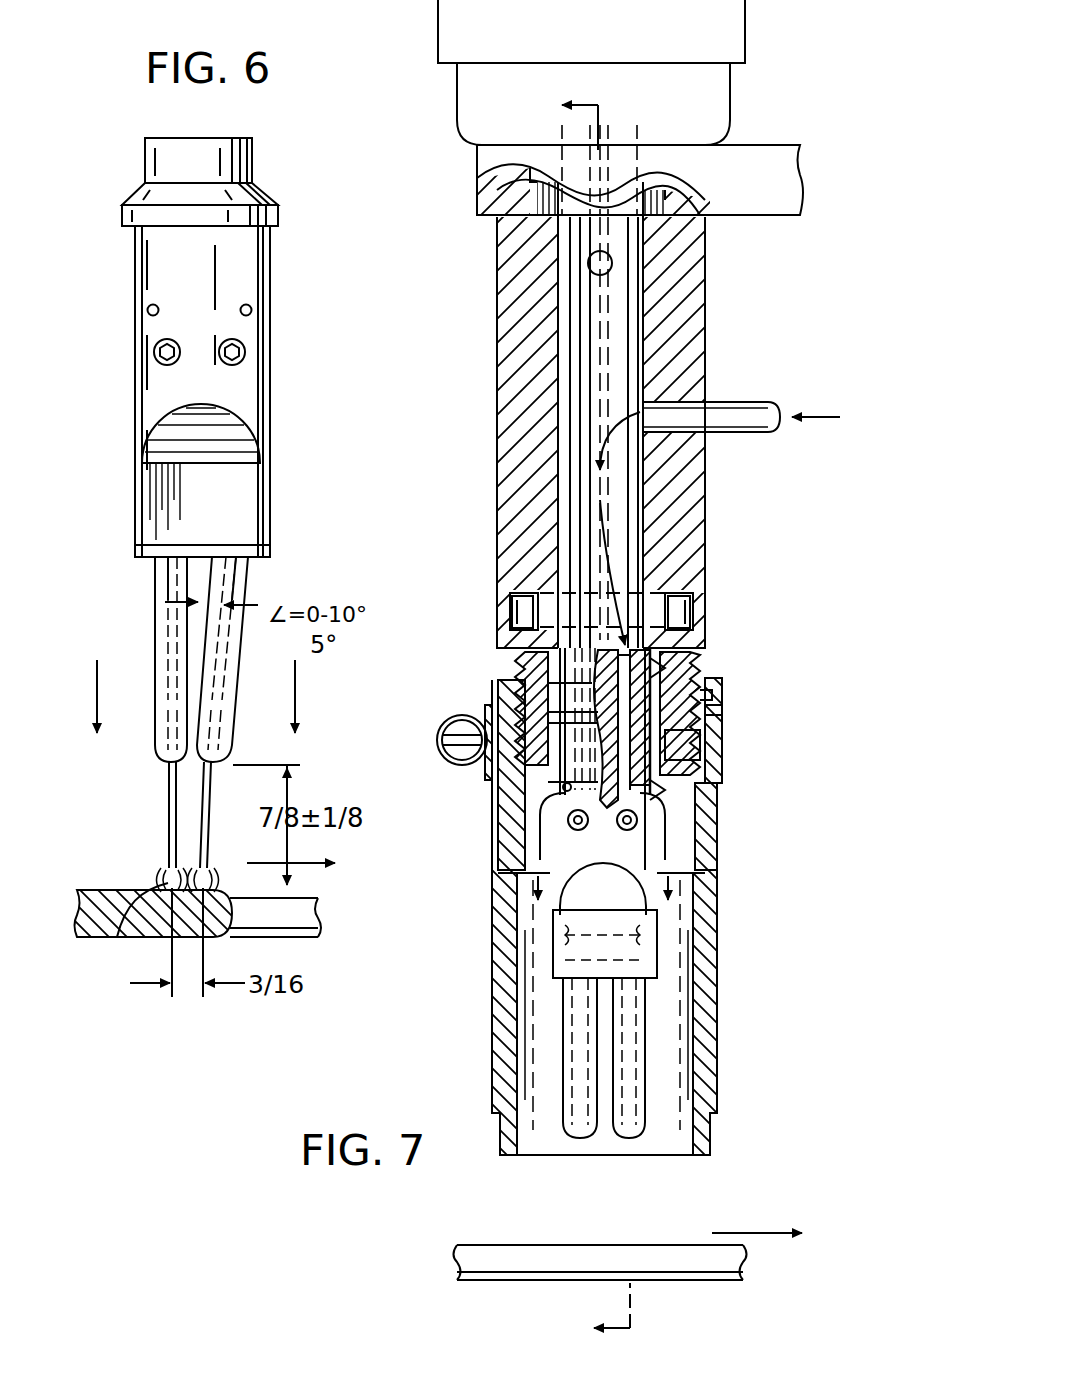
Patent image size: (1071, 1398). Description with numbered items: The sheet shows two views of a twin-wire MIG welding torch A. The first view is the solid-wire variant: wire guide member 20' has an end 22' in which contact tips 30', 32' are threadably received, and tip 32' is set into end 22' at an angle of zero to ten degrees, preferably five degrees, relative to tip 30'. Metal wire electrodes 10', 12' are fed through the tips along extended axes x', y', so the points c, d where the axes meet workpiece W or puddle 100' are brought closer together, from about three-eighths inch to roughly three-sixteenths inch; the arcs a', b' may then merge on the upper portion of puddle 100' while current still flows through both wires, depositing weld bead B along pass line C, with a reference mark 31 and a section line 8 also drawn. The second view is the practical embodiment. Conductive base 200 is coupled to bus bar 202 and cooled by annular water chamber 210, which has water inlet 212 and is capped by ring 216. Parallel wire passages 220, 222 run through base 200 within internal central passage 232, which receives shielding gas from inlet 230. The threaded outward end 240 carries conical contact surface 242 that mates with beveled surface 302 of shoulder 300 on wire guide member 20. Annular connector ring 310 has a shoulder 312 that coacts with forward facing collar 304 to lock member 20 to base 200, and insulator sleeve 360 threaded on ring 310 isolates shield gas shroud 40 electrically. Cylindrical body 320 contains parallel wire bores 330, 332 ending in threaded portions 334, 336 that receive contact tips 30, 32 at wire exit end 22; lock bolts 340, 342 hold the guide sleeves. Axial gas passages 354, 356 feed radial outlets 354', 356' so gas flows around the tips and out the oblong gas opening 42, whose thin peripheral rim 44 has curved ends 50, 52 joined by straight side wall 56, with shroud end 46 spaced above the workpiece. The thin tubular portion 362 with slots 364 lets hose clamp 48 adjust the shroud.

In FIG. 6, the wire guide member 20' is at (161, 347).
In FIG. 6, the end of member 22' is at (157, 495).
In FIG. 6, the contact tip 30' is at (118, 659).
In FIG. 6, the contact tip 32' is at (278, 659).
In FIG. 6, the extended axis x' is at (117, 577).
In FIG. 6, the extended axis y' is at (281, 571).
In FIG. 6, the reference 31 is at (381, 751).
In FIG. 6, the metal wire electrode 10' is at (125, 872).
In FIG. 6, the metal wire electrode 12' is at (153, 879).
In FIG. 6, the arc a' is at (141, 853).
In FIG. 6, the arc b' is at (216, 853).
In FIG. 6, the point d is at (212, 876).
In FIG. 6, the point c is at (136, 923).
In FIG. 6, the weld bead B is at (100, 884).
In FIG. 6, the puddle 100' is at (306, 901).
In FIG. 6, the workpiece W is at (302, 938).
In FIG. 7, the workpiece W is at (466, 1242).
In FIG. 6, the pass line C is at (298, 863).
In FIG. 7, the pass line C is at (768, 1233).
In FIG. 7, the section line 8- 8 is at (578, 712).
In FIG. 7, the bus bar 202 is at (760, 150).
In FIG. 7, the base 200 is at (708, 270).
In FIG. 7, the wire passage 220 is at (572, 241).
In FIG. 7, the wire passage 222 is at (628, 252).
In FIG. 7, the water inlet 212 is at (575, 267).
In FIG. 7, the gas inlet 230 is at (745, 405).
In FIG. 7, the internal central passage 232 is at (640, 465).
In FIG. 7, the annular water chamber 210 is at (522, 597).
In FIG. 7, the conical contact surface 242 is at (520, 642).
In FIG. 7, the ring 216 is at (708, 598).
In FIG. 7, the outward end 240 is at (690, 655).
In FIG. 7, the shoulder 300 is at (530, 690).
In FIG. 7, the beveled surface 302 is at (700, 682).
In FIG. 7, the gas passage 354 is at (749, 648).
In FIG. 7, the shoulder 312 is at (705, 700).
In FIG. 7, the slot 364 is at (722, 716).
In FIG. 7, the forward facing collar 304 is at (705, 737).
In FIG. 7, the hose clamp 48 is at (722, 772).
In FIG. 7, the gas outlet 354' is at (766, 798).
In FIG. 7, the thin tubular portion 362 is at (718, 815).
In FIG. 7, the lock bolt 342 is at (718, 827).
In FIG. 7, the gas passage 356 is at (452, 731).
In FIG. 7, the annular connector ring 310 is at (437, 750).
In FIG. 7, the gas outlet 356' is at (446, 775).
In FIG. 7, the insulator sleeve 360 is at (508, 805).
In FIG. 7, the lock bolt 340 is at (562, 823).
In FIG. 7, the welding torch A is at (738, 881).
In FIG. 7, the cylindrical body 320 is at (507, 885).
In FIG. 7, the wire guide member 20 is at (700, 920).
In FIG. 7, the wire exit end 22 is at (690, 968).
In FIG. 7, the contact tip 30 is at (511, 1058).
In FIG. 7, the contact tip 32 is at (720, 1058).
In FIG. 7, the oblong gas opening 42 is at (668, 1095).
In FIG. 7, the shield gas shroud 40 is at (718, 1130).
In FIG. 7, the peripheral rim 44 is at (707, 1160).
In FIG. 7, the curved end 50 is at (520, 1157).
In FIG. 7, the end of shroud 46 is at (560, 1160).
In FIG. 7, the straight side wall 56 is at (630, 1160).
In FIG. 7, the curved end 52 is at (688, 1160).
In FIG. 7, the wire bore 330 is at (493, 933).
In FIG. 7, the wire bore 332 is at (680, 940).
In FIG. 7, the threaded portion 334 is at (545, 960).
In FIG. 7, the threaded portion 336 is at (695, 985).